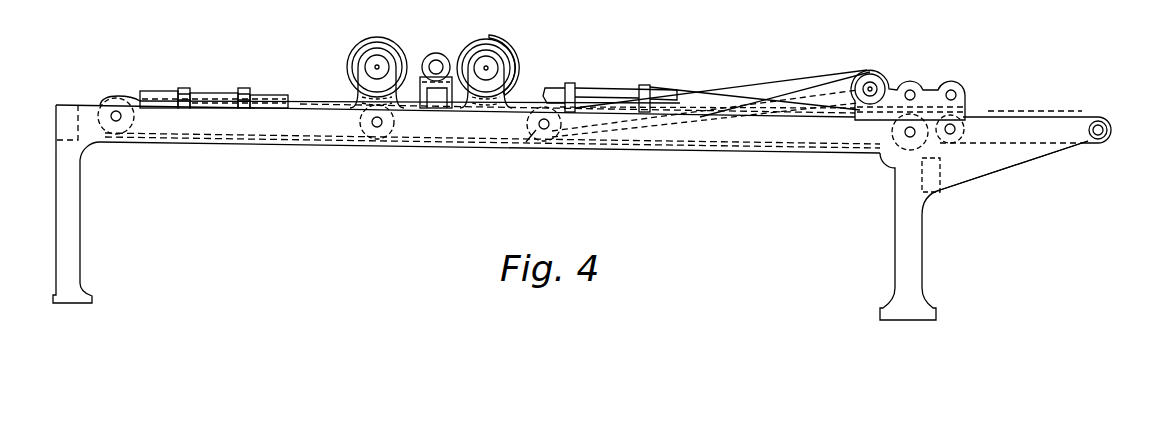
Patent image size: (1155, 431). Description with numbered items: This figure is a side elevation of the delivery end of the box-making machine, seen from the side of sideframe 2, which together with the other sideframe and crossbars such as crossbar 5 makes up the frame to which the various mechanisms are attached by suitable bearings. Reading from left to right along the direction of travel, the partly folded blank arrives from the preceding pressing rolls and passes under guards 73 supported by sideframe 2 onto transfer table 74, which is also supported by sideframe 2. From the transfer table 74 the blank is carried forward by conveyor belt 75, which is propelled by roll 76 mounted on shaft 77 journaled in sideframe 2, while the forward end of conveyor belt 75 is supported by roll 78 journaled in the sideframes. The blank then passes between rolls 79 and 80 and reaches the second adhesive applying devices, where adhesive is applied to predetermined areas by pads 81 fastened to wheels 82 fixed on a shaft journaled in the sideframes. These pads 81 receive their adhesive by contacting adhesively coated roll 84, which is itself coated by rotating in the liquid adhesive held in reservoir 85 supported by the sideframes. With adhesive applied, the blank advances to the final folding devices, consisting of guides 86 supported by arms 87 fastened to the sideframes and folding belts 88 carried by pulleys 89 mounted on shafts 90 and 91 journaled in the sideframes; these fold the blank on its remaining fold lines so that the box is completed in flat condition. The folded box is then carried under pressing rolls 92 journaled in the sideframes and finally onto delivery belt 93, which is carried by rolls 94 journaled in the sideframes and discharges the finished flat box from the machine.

The sideframe 2 is at (893, 232).
The crossbar 5 is at (940, 180).
The guards 73 is at (244, 88).
The transfer table 74 is at (160, 91).
The conveyor belt 75 is at (328, 101).
The roll 76 is at (128, 128).
The shaft 77 is at (113, 108).
The roll 78 is at (895, 142).
The roll 79 is at (376, 37).
The roll 80 is at (375, 140).
The pads 81 is at (499, 10).
The wheels 82 is at (514, 58).
The adhesively coated roll 84 is at (452, 34).
The reservoir 85 is at (410, 100).
The guides 86 is at (548, 88).
The arms 87 is at (642, 85).
The folding belts 88 is at (770, 52).
The pulleys 89 is at (530, 138).
The shaft 90 is at (546, 140).
The shaft 91 is at (866, 72).
The pressing rolls 92 is at (963, 80).
The delivery belt 93 is at (1015, 165).
The rolls 94 is at (975, 118).